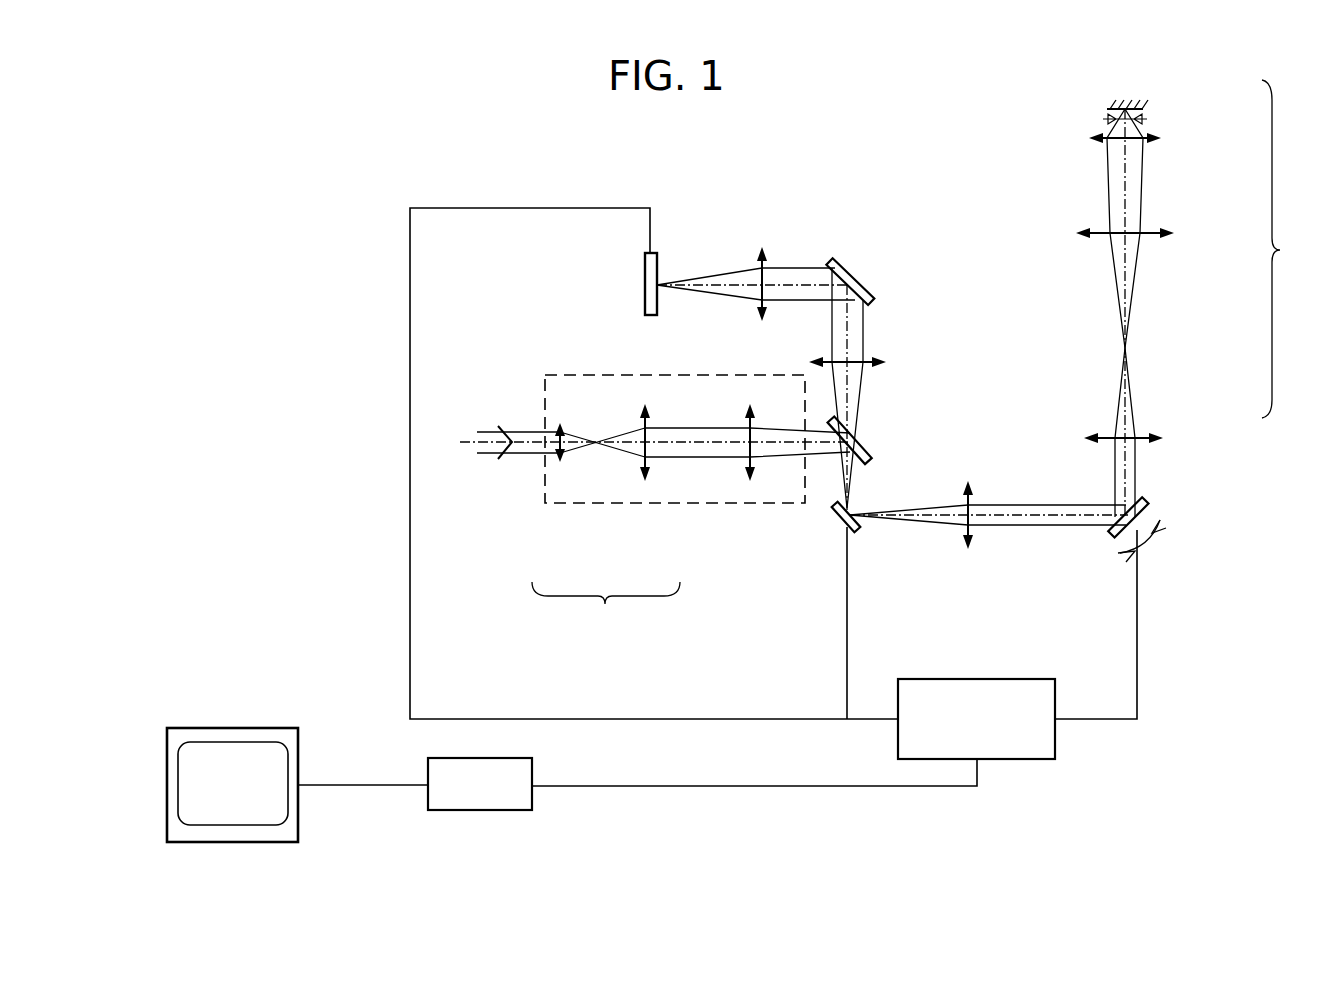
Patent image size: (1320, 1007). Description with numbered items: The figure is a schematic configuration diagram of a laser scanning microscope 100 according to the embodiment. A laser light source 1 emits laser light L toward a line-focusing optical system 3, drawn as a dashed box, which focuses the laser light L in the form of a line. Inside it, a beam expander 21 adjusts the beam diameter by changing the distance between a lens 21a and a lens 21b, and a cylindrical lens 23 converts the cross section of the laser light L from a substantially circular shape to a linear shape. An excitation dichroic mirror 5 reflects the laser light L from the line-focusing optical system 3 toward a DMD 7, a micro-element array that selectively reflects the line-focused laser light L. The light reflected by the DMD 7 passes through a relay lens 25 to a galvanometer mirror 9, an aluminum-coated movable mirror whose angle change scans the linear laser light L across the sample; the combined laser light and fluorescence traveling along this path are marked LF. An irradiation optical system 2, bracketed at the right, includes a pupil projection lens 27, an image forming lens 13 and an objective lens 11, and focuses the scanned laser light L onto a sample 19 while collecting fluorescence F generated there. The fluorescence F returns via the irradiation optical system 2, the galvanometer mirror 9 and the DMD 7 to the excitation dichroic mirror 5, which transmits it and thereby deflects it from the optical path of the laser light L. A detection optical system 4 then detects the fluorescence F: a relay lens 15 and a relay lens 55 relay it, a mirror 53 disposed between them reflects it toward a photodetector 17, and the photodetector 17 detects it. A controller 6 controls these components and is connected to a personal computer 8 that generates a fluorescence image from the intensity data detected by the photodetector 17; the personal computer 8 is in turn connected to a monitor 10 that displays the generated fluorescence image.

The laser light source 1 is at (477, 442).
The irradiation optical system 2 is at (1281, 249).
The line-focusing optical system 3 is at (574, 375).
The detection optical system 4 is at (893, 242).
The excitation dichroic mirror 5 is at (870, 448).
The controller 6 is at (1010, 760).
The DMD (micro-element array) 7 is at (837, 527).
The personal computer 8 is at (480, 810).
The galvanometer mirror 9 is at (1112, 536).
The monitor 10 is at (237, 842).
The objective lens 11 is at (1178, 132).
The image forming lens 13 is at (1178, 223).
The relay lens 15 is at (882, 338).
The photodetector 17 is at (645, 268).
The sample 19 is at (1131, 105).
The beam expander 21 is at (606, 610).
The lens 21a is at (560, 492).
The lens 21b is at (645, 492).
The cylindrical lens 23 is at (750, 492).
The relay lens 25 is at (972, 562).
The pupil projection lens 27 is at (1178, 428).
The mirror 53 is at (855, 262).
The relay lens 55 is at (768, 245).
The laser scanning microscope 100 is at (1205, 668).
The laser light L is at (528, 455).
The fluorescence F is at (860, 392).
The laser light and fluorescence LF is at (1038, 505).